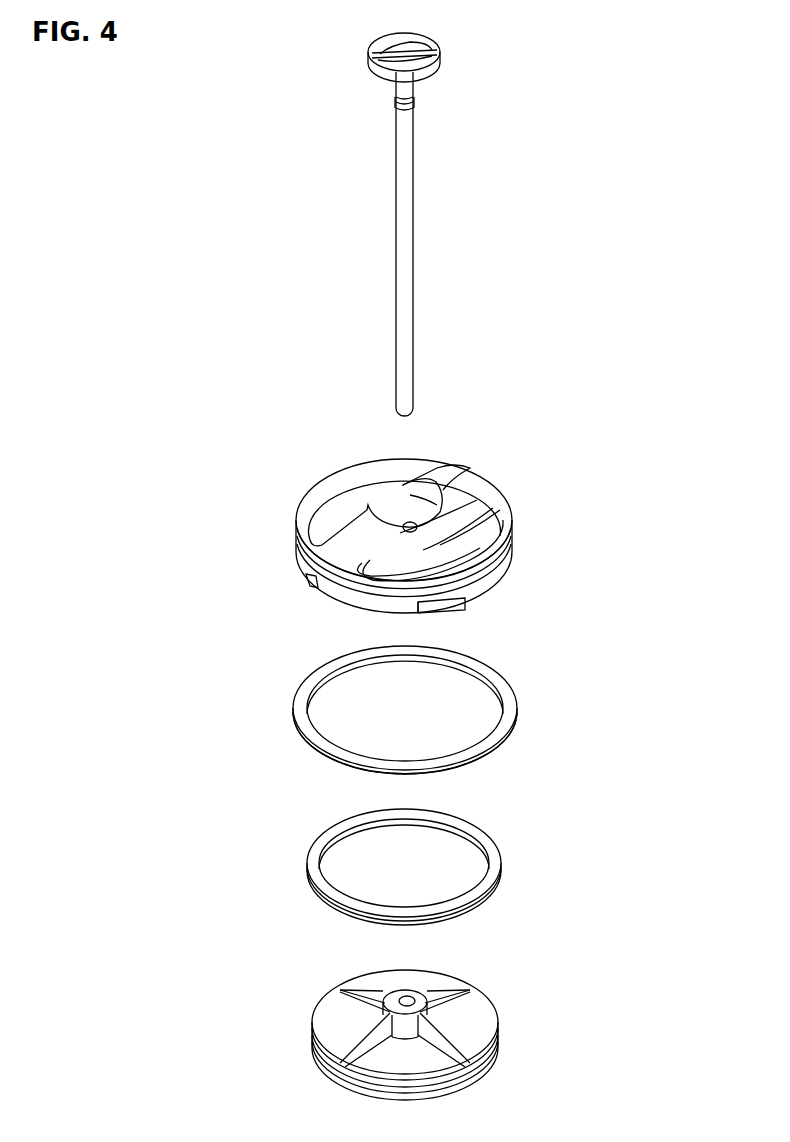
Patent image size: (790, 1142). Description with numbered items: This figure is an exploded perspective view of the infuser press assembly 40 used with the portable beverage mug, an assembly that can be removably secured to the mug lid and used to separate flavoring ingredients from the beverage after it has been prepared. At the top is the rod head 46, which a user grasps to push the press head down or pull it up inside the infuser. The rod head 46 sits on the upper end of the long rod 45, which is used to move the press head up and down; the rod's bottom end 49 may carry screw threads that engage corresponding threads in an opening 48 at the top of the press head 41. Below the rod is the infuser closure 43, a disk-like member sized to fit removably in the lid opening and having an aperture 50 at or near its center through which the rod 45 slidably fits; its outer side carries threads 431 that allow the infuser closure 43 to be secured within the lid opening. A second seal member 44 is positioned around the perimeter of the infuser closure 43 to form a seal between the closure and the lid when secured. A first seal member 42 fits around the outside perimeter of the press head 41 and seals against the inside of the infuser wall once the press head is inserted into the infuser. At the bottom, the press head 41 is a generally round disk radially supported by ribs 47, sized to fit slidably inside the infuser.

The infuser press assembly 40 is at (262, 178).
The press head 41 is at (485, 1027).
The first seal member 42 is at (492, 862).
The infuser closure 43 is at (471, 480).
The threads 431 is at (418, 608).
The second seal member 44 is at (503, 688).
The rod 45 is at (408, 245).
The rod head 46 is at (413, 45).
The ribs 47 is at (440, 992).
The opening 48 is at (405, 1001).
The bottom end 49 is at (412, 407).
The aperture 50 is at (408, 525).